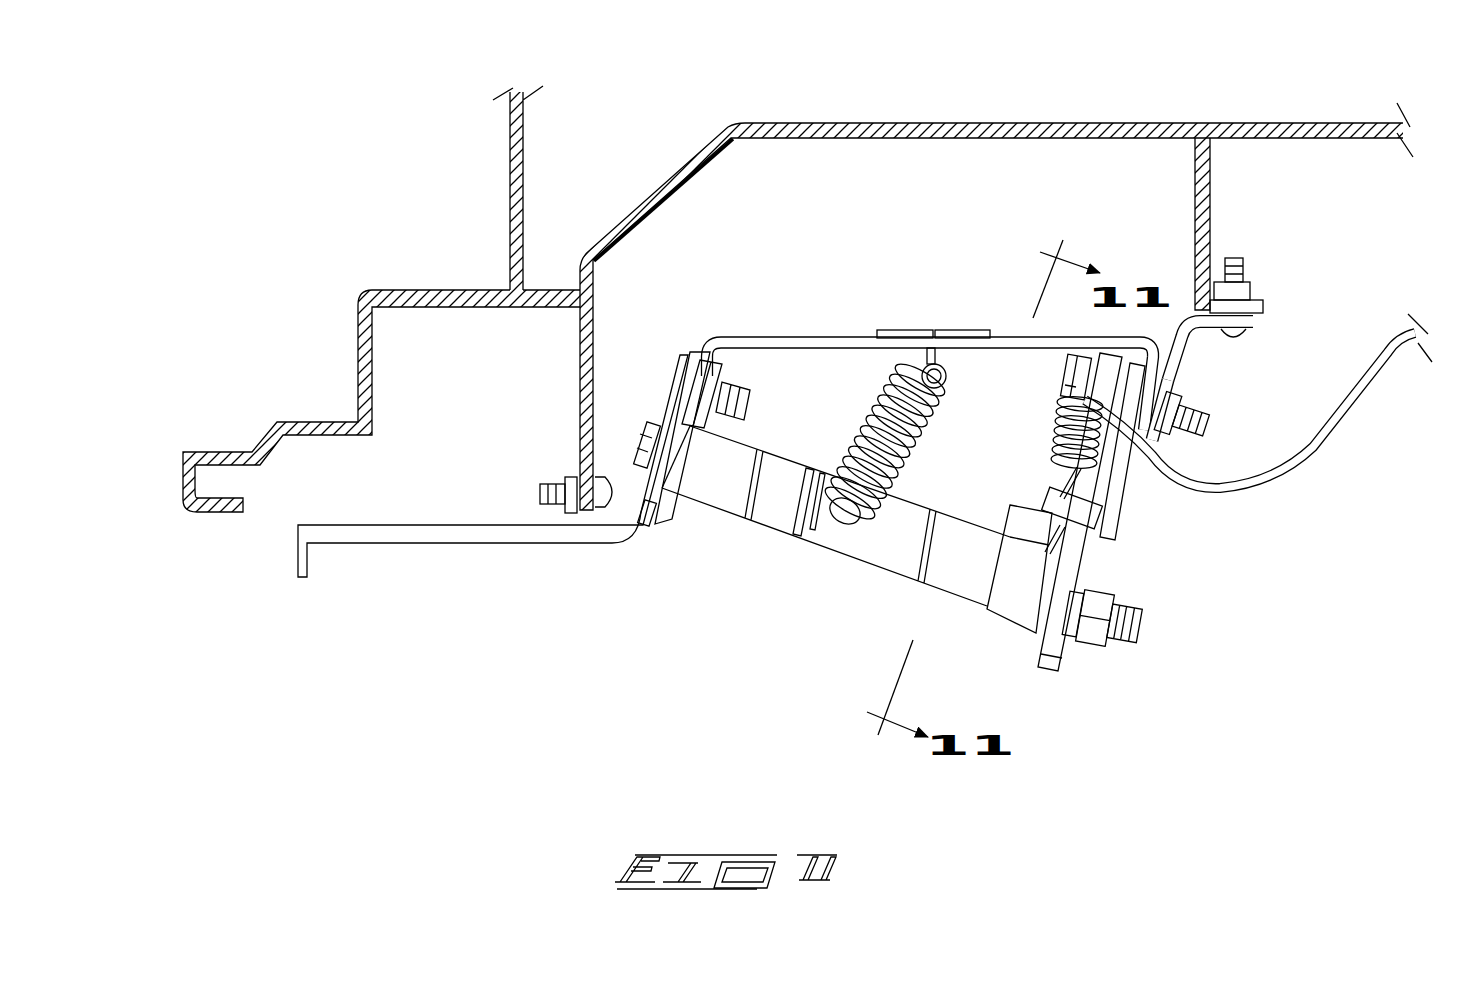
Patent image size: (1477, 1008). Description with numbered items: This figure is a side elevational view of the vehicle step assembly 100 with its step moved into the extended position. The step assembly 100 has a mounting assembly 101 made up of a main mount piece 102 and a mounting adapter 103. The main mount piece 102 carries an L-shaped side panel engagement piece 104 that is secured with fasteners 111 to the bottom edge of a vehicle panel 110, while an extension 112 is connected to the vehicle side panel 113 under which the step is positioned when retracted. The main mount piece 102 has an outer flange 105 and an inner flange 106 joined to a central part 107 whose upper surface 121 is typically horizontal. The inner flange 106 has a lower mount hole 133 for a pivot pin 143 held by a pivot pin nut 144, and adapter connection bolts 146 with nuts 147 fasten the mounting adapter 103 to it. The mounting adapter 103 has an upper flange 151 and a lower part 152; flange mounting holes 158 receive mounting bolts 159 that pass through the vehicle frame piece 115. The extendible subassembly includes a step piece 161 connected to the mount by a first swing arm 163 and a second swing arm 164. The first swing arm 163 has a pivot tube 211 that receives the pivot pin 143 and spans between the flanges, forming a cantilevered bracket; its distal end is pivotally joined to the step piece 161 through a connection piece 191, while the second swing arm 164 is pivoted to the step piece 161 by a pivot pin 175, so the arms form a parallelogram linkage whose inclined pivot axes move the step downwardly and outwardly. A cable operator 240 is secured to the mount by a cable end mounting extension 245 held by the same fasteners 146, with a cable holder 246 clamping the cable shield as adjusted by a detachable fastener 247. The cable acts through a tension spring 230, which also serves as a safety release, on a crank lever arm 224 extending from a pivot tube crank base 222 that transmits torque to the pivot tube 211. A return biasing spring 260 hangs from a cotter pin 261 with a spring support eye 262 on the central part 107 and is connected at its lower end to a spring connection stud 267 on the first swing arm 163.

The vehicle step assembly 100 is at (676, 670).
The mounting assembly 101 is at (1143, 262).
The main mount piece 102 is at (850, 337).
The mounting adapter 103 is at (1192, 348).
The side panel engagement piece 104 is at (600, 470).
The outer flange 105 is at (670, 525).
The inner flange 106 is at (1086, 568).
The central part 107 is at (793, 337).
The vehicle panel 110 is at (966, 120).
The fasteners 111 is at (540, 492).
The extension 112 is at (360, 302).
The vehicle side panel 113 is at (510, 183).
The vehicle frame piece 115 is at (1210, 188).
The upper surface 121 is at (1013, 337).
The lower mount hole 133 is at (1060, 674).
The pivot pin 143 is at (653, 390).
The pivot pin nut 144 is at (1142, 628).
The adapter connection bolts 146 is at (1212, 433).
The nuts 147 is at (1167, 437).
The upper flange 151 is at (1264, 310).
The lower part 152 is at (1110, 542).
The flange mounting holes 158 is at (1262, 298).
The mounting bolts 159 is at (1242, 334).
The step piece 161 is at (428, 545).
The first swing arm 163 is at (841, 560).
The second swing arm 164 is at (705, 362).
The pivot pin 175 is at (645, 375).
The first swing arm distal pivot connection piece 191 is at (688, 466).
The pivot tube 211 is at (899, 550).
The pivot tube crank base 222 is at (1000, 618).
The crank lever arm 224 is at (1038, 544).
The tension spring 230 is at (1054, 446).
The cable operator 240 is at (1322, 458).
The cable end mounting extension 245 is at (1180, 378).
The cable holder 246 is at (1062, 397).
The detachable fastener 247 is at (1061, 372).
The return biasing spring 260 is at (872, 393).
The cotter pin 261 is at (915, 330).
The spring support eye 262 is at (924, 362).
The spring connection stud 267 is at (812, 538).